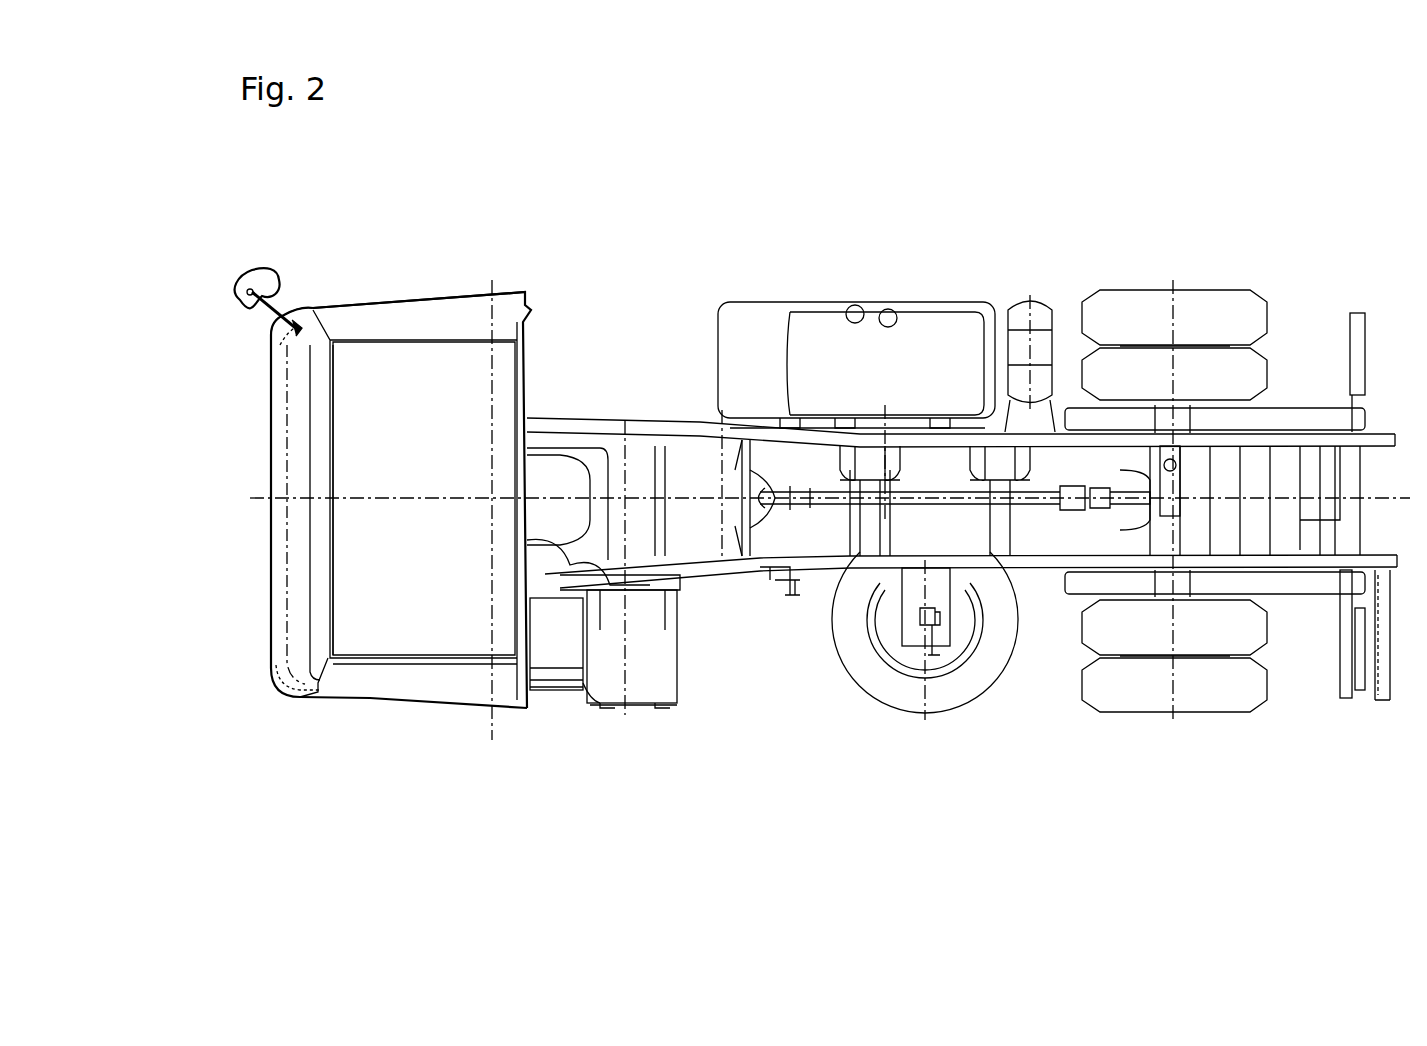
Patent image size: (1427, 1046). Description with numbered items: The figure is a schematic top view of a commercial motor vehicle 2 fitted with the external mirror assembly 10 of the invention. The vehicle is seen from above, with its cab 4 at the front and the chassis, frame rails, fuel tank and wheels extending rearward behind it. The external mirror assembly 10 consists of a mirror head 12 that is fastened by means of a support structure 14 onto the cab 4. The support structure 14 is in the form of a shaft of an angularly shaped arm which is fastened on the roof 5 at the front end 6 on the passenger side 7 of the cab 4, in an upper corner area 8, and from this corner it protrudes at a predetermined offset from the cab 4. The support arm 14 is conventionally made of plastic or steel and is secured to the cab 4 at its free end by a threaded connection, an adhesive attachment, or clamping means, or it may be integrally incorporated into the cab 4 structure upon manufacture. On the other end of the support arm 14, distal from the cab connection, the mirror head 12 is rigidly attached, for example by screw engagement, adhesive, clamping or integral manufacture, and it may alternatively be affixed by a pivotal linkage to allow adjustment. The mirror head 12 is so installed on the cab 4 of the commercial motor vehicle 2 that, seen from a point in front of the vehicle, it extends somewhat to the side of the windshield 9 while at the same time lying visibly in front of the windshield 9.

The commercial motor vehicle 2 is at (606, 760).
The cab 4 is at (448, 688).
The roof 5 is at (430, 366).
The front end 6 is at (268, 467).
The passenger side 7 is at (364, 299).
The upper corner area 8 is at (273, 332).
The windshield 9 is at (297, 528).
The external mirror assembly 10 is at (222, 345).
The mirror head 12 is at (238, 300).
The support structure 14 is at (274, 302).